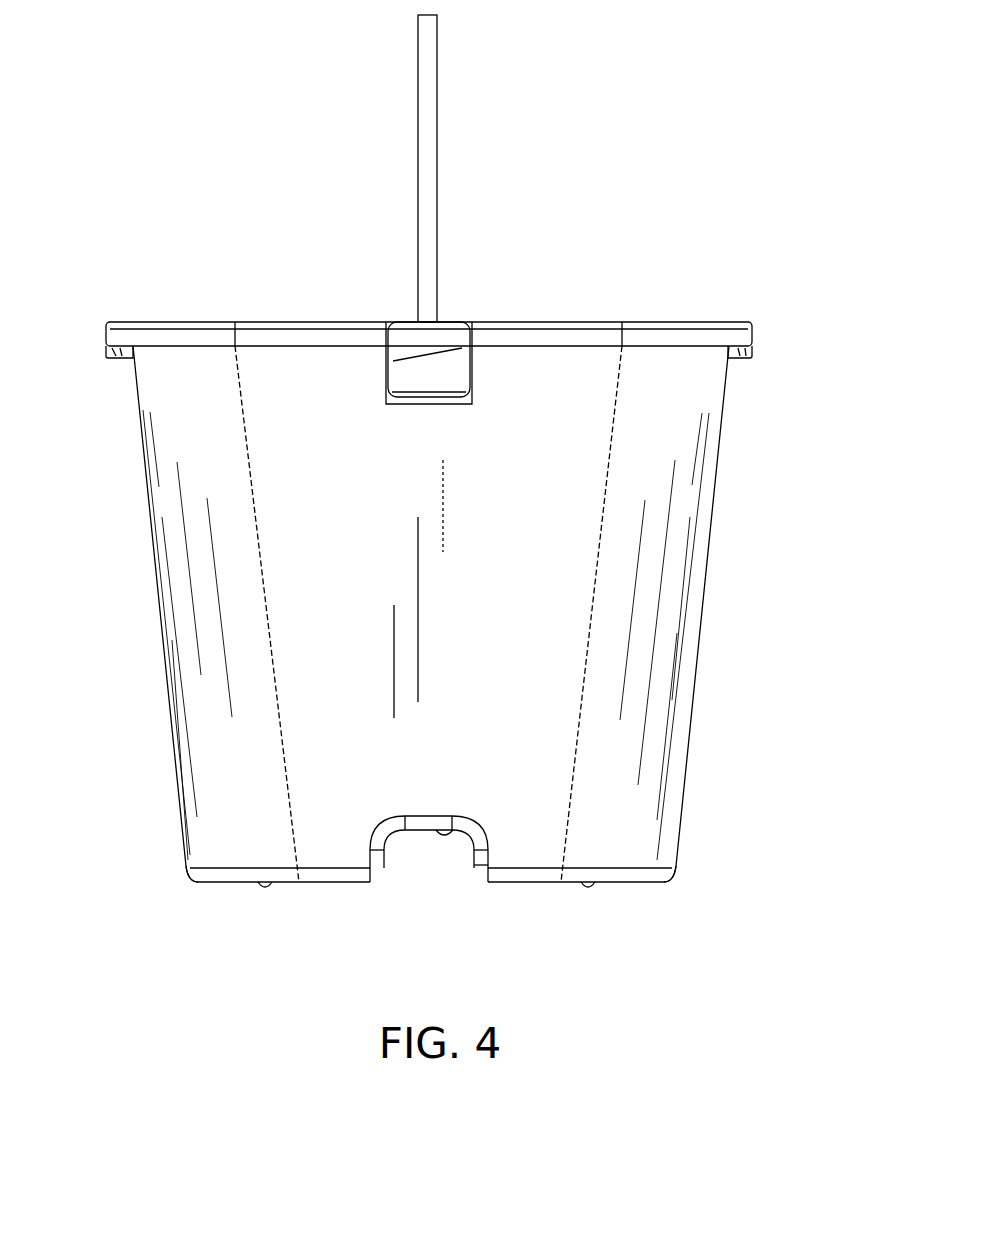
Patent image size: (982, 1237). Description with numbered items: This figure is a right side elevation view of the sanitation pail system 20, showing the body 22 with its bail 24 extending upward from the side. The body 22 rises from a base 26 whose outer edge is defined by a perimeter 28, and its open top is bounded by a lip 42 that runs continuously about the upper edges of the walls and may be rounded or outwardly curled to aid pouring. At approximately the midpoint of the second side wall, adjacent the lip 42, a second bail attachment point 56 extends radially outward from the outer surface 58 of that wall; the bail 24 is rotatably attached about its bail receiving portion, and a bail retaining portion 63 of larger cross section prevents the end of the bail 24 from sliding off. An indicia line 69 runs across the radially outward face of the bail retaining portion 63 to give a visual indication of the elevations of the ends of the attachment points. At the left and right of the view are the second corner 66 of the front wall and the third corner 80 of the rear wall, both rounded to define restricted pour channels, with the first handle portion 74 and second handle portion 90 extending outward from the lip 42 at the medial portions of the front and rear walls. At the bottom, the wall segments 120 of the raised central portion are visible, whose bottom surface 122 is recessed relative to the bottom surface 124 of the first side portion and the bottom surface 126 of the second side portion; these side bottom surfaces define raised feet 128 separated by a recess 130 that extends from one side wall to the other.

The sanitation pail system 20 is at (708, 190).
The body 22 is at (438, 601).
The bail 24 is at (437, 200).
The base 26 is at (336, 888).
The perimeter 28 is at (612, 880).
The lip 42 is at (580, 327).
The second bail attachment point 56 is at (470, 307).
The outer surface 58 is at (461, 587).
The bail retaining portion 63 is at (437, 378).
The second corner 66 is at (203, 765).
The indicia line 69 is at (448, 352).
The first handle portion 74 is at (123, 352).
The third corner 80 is at (682, 738).
The second handle portion 90 is at (733, 356).
The wall segments 120 is at (388, 885).
The bottom surface of the raised portion 122 is at (455, 833).
The bottom surface of the first side portion 124 is at (598, 884).
The bottom surface of the second side portion 126 is at (260, 884).
The raised feet 128 is at (232, 886).
The recess 130 is at (424, 860).